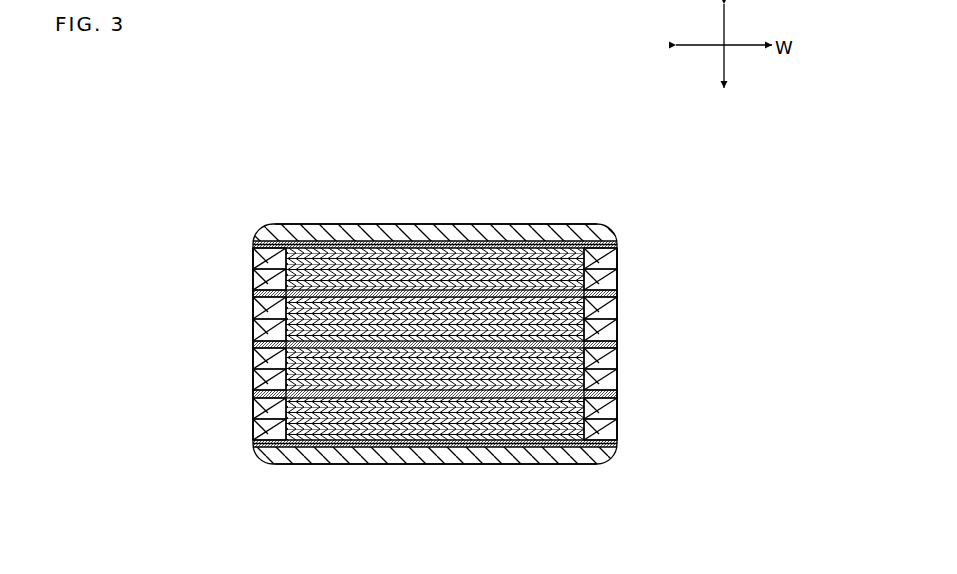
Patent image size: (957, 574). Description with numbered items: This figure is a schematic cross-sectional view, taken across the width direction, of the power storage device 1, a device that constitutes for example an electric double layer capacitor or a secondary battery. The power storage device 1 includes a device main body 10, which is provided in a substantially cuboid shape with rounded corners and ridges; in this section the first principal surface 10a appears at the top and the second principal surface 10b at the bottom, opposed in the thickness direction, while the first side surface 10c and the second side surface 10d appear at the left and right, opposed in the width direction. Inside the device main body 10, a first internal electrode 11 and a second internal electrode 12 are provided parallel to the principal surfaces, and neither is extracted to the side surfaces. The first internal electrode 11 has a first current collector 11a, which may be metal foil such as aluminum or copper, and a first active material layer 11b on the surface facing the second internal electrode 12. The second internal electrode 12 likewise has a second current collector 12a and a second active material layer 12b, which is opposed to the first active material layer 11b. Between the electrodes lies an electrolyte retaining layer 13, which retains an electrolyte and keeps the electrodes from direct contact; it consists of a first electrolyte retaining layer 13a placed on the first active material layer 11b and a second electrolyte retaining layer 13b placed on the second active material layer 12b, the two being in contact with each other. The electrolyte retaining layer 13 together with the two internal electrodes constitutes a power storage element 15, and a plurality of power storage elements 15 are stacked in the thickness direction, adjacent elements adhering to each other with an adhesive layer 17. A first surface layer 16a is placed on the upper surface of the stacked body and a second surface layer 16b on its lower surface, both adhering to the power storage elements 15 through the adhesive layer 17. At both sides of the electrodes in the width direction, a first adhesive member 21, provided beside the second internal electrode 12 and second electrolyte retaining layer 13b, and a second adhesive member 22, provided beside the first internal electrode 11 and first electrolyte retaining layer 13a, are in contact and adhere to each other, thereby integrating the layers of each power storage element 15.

The power storage device 1 is at (569, 180).
The device main body 10 is at (456, 349).
The first principal surface 10a is at (435, 192).
The second principal surface 10b is at (435, 503).
The first side surface 10c is at (234, 342).
The second side surface 10d is at (657, 343).
The first internal electrode 11 is at (435, 189).
The first current collector 11a is at (300, 243).
The first active material layer 11b is at (332, 247).
The second internal electrode 12 is at (435, 496).
The second current collector 12a is at (307, 447).
The second active material layer 12b is at (352, 447).
The electrolyte retaining layer 13 is at (657, 272).
The first electrolyte retaining layer 13a is at (585, 263).
The second electrolyte retaining layer 13b is at (585, 280).
The power storage element 15 is at (422, 246).
The first surface layer 16a is at (532, 224).
The second surface layer 16b is at (542, 464).
The adhesive layer 17 is at (253, 395).
The first adhesive member 21 is at (253, 283).
The second adhesive member 22 is at (253, 262).